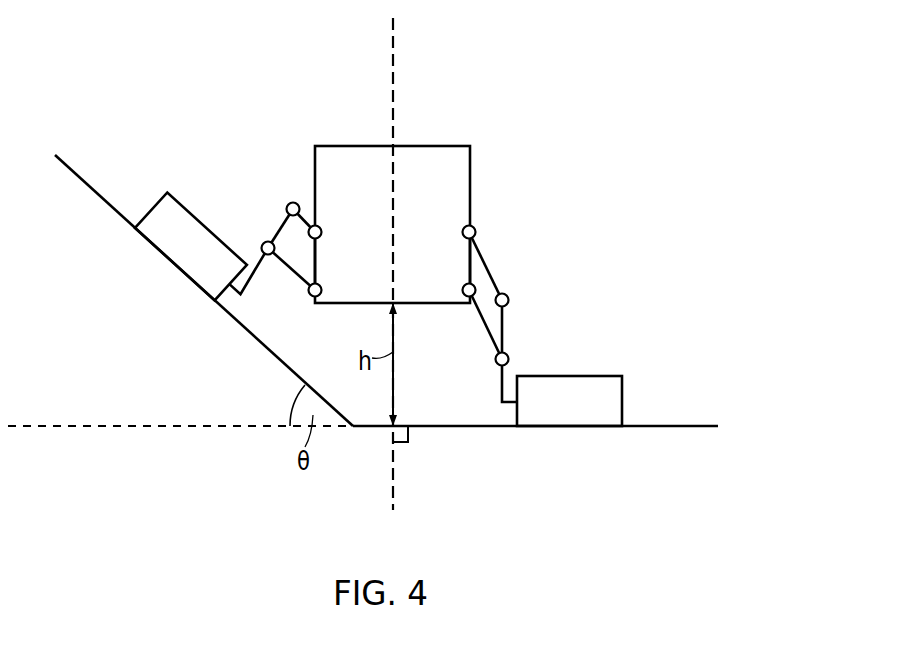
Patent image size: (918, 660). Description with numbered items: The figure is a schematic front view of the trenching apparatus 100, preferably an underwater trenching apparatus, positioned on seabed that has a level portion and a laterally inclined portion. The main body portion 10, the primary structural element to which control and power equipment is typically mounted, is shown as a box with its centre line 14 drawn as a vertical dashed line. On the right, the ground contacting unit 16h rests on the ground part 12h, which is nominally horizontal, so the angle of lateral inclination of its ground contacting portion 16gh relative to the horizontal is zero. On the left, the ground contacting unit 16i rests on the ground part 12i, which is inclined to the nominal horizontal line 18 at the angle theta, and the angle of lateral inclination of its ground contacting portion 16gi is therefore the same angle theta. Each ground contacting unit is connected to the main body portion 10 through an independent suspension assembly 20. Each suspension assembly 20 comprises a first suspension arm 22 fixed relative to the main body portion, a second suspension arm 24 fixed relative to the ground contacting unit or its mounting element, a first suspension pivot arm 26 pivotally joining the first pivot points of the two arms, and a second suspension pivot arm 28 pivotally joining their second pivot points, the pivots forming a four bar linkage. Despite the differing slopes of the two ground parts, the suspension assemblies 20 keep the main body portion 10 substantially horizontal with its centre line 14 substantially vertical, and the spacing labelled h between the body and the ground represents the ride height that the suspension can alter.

The trenching apparatus 100 is at (662, 115).
The main body portion 10 is at (470, 146).
The inclined ground part 12i is at (107, 202).
The horizontal ground part 12h is at (682, 427).
The centre line 14 is at (393, 57).
The ground contacting unit on inclined ground 16i is at (168, 192).
The ground contacting unit on horizontal ground 16h is at (632, 353).
The ground contacting portion on inclined ground 16gi is at (185, 275).
The ground contacting portion on horizontal ground 16gh is at (572, 427).
The nominal horizontal line 18 is at (60, 430).
The independent suspension assembly 20 is at (268, 203).
The first suspension arm 22 is at (470, 267).
The second suspension arm 24 is at (278, 228).
The first suspension pivot arm 26 is at (305, 217).
The second suspension pivot arm 28 is at (300, 270).